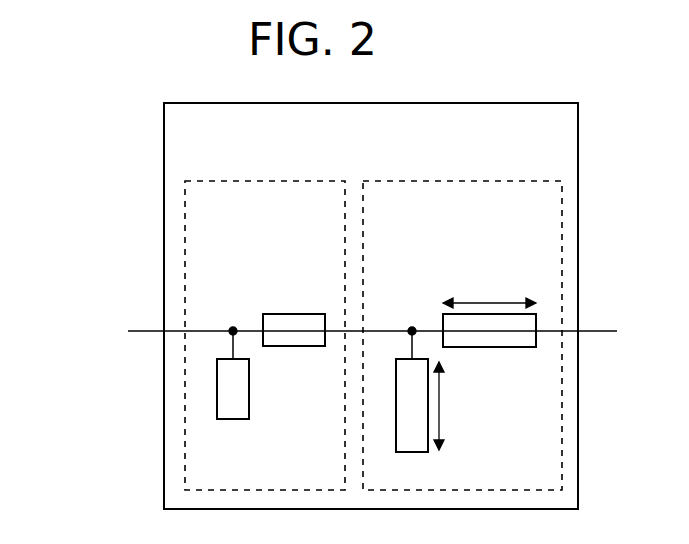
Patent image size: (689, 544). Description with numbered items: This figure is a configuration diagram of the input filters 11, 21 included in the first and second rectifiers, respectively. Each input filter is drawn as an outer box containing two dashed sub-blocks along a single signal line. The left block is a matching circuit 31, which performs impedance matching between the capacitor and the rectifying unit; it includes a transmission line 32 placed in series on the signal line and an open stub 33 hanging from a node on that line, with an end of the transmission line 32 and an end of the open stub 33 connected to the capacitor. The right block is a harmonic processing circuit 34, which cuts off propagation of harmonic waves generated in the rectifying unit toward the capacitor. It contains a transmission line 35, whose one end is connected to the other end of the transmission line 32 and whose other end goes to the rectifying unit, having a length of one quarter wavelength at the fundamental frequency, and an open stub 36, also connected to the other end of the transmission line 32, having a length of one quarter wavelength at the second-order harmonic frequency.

The input filter 11 is at (316, 306).
The input filter 21 is at (164, 160).
The matching circuit 31 is at (323, 181).
The transmission line 32 is at (311, 346).
The open stub 33 is at (249, 412).
The harmonic processing circuit 34 is at (524, 181).
The transmission line 35 is at (525, 347).
The open stub 36 is at (420, 452).